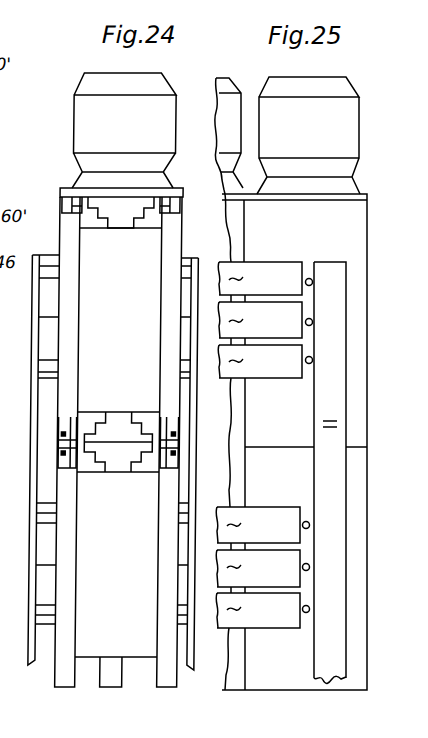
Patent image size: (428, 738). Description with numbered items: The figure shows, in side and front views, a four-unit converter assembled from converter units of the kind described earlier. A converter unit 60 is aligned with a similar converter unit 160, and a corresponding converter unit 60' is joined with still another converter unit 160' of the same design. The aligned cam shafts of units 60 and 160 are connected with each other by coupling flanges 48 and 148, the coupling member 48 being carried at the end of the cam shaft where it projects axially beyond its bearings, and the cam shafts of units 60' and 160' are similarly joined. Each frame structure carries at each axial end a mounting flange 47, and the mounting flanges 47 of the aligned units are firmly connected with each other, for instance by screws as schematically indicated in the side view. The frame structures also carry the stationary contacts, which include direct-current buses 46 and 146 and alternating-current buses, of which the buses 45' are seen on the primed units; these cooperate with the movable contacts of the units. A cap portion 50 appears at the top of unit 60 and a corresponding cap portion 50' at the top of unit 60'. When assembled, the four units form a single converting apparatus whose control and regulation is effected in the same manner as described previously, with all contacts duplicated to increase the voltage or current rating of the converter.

In FIG. 24, the housing cap 50 is at (142, 130).
In FIG. 25, the housing cap 50 is at (227, 134).
In FIG. 24, the converter unit 60 is at (120, 315).
In FIG. 25, the converter unit 60 is at (220, 440).
In FIG. 24, the converter unit 160 is at (117, 564).
In FIG. 24, the coupling member 48 is at (117, 212).
In FIG. 24, the coupling flange 148 is at (122, 481).
In FIG. 24, the mounting flange 47 is at (66, 203).
In FIG. 24, the direct-current bus 46 is at (37, 345).
In FIG. 25, the direct-current bus 46 is at (324, 400).
In FIG. 24, the direct-current bus 146 is at (196, 423).
In FIG. 25, the housing cap 50' is at (324, 135).
In FIG. 25, the converter unit 60' is at (311, 320).
In FIG. 25, the converter unit 160' is at (315, 568).
In FIG. 25, the plates 45' is at (262, 445).